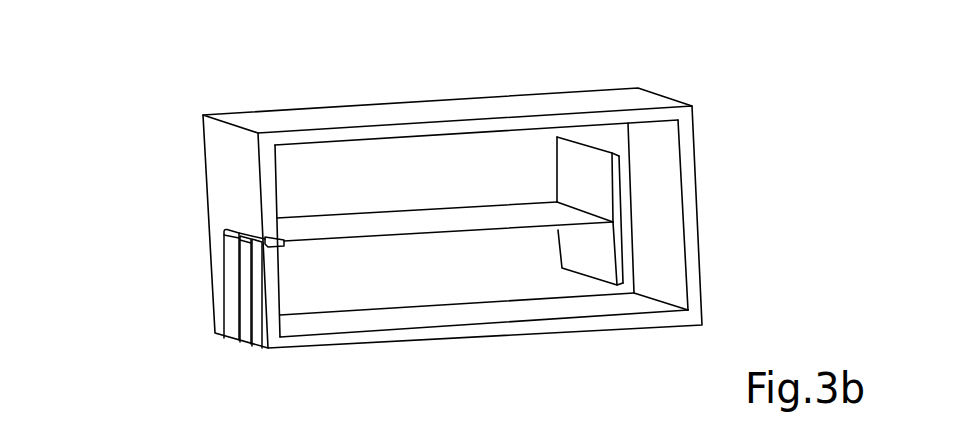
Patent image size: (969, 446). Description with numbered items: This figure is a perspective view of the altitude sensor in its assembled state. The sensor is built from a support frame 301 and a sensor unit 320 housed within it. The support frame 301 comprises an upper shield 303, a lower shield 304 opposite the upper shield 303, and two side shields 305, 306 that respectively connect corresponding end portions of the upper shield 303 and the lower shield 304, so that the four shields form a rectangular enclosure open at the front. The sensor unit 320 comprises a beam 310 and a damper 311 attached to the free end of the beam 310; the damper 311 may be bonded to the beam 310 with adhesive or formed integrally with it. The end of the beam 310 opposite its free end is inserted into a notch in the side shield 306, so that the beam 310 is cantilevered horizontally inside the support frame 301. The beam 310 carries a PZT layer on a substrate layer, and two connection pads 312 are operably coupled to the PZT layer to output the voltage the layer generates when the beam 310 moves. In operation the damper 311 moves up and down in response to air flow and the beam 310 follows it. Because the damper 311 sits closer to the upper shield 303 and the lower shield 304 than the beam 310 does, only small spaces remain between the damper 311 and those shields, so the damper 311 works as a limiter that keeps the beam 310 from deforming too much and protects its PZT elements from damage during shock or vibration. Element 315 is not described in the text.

The support frame 301 is at (186, 106).
The upper shield 303 is at (433, 108).
The lower shield 304 is at (475, 327).
The side shield 305 is at (690, 206).
The side shield 306 is at (225, 182).
The beam 310 is at (478, 217).
The damper 311 is at (590, 261).
The connection pads 312 is at (257, 284).
The bracket 315 is at (227, 229).
The sensor unit 320 is at (462, 156).